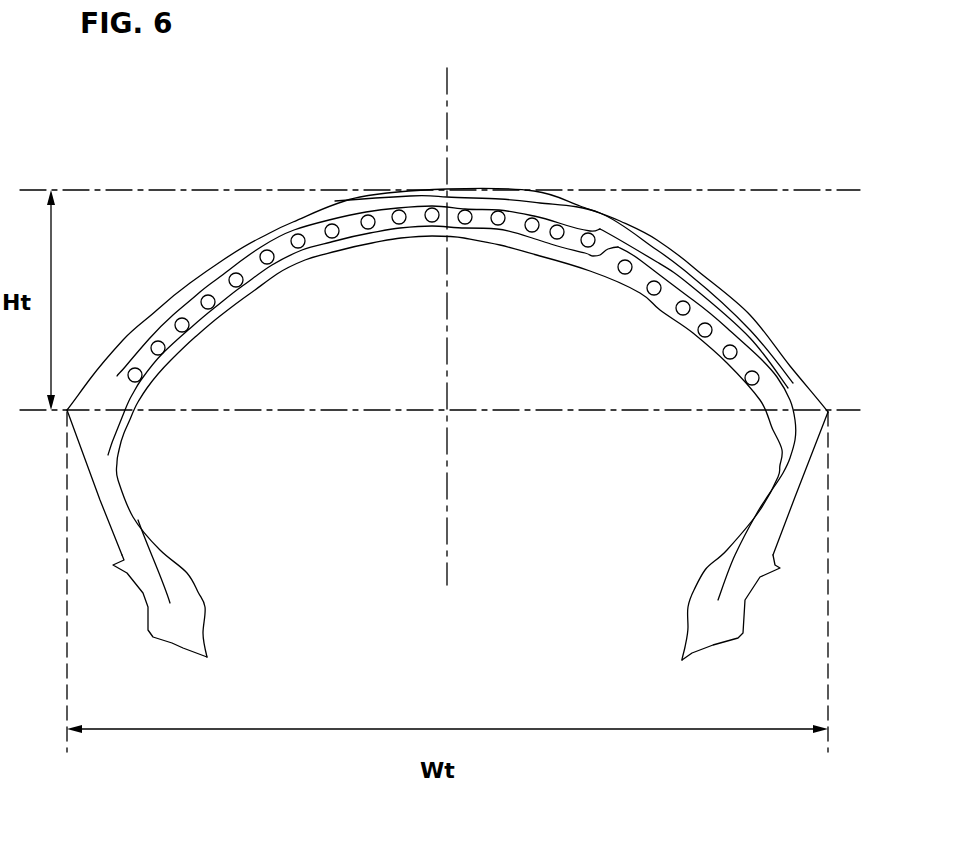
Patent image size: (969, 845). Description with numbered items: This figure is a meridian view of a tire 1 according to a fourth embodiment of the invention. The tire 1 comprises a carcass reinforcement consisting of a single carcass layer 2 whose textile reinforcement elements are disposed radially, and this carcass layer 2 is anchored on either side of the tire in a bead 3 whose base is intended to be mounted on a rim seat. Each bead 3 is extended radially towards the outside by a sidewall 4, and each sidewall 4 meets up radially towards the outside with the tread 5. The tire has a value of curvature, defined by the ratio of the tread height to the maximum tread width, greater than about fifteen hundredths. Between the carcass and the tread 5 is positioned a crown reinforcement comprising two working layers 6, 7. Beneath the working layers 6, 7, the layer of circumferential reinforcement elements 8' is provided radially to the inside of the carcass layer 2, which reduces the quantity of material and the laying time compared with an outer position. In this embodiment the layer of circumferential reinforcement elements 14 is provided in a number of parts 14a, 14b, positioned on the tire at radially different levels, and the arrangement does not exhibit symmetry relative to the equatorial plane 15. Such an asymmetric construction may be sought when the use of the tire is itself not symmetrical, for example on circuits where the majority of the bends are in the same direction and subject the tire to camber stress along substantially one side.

The tire 1 is at (560, 157).
The carcass layer 2 is at (140, 532).
The bead 3 is at (183, 605).
The sidewall 4 is at (107, 512).
The tread 5 is at (313, 205).
The working layer 6 is at (600, 229).
The working layer 7 is at (694, 269).
The layer of circumferential reinforcement elements 8' is at (443, 296).
The layer of circumferential reinforcement elements 14 is at (452, 403).
The part of the layer of circumferential reinforcement elements 14a is at (238, 281).
The part of the layer of circumferential reinforcement elements 14b is at (706, 329).
The equatorial plane 15 is at (449, 100).